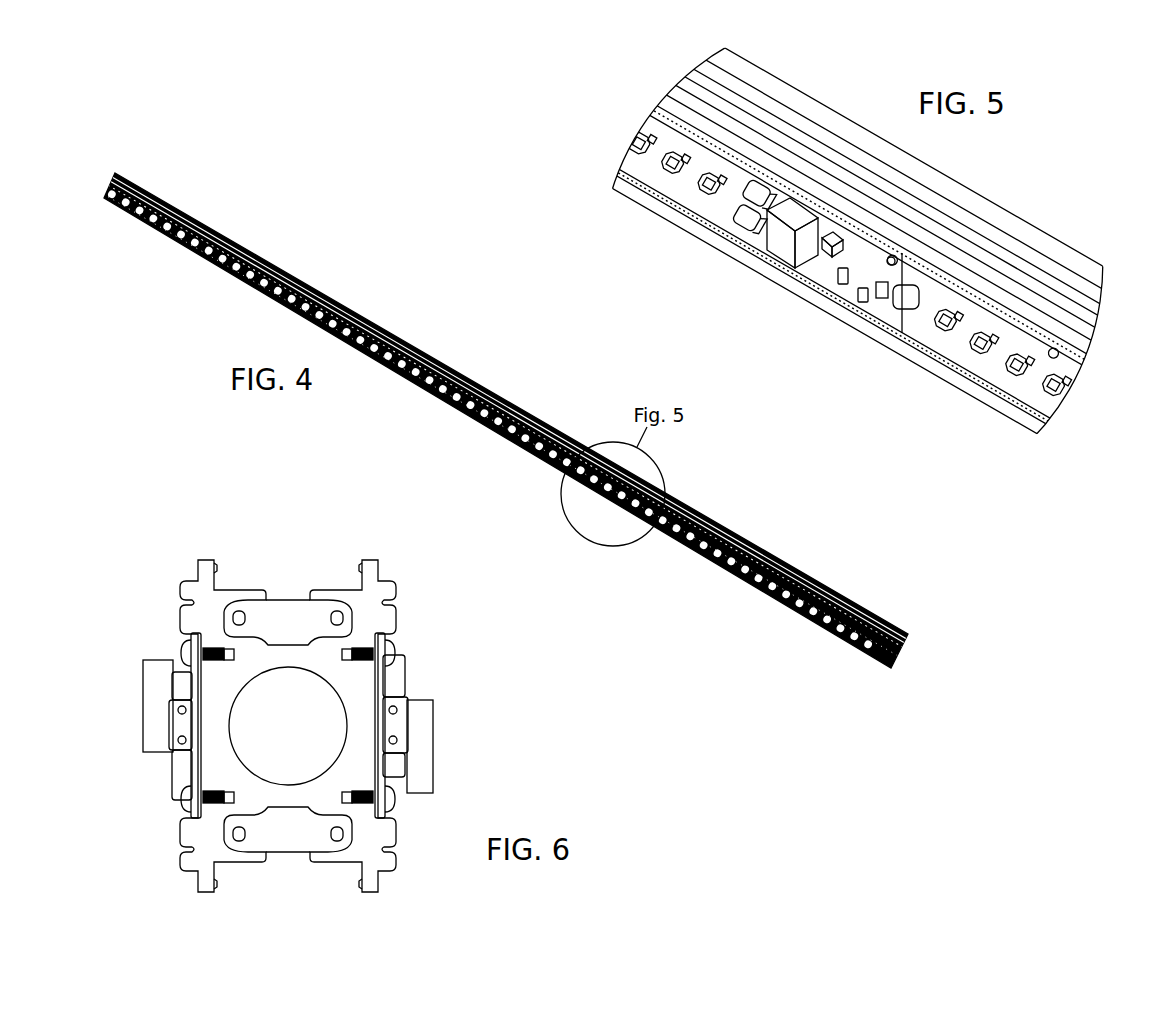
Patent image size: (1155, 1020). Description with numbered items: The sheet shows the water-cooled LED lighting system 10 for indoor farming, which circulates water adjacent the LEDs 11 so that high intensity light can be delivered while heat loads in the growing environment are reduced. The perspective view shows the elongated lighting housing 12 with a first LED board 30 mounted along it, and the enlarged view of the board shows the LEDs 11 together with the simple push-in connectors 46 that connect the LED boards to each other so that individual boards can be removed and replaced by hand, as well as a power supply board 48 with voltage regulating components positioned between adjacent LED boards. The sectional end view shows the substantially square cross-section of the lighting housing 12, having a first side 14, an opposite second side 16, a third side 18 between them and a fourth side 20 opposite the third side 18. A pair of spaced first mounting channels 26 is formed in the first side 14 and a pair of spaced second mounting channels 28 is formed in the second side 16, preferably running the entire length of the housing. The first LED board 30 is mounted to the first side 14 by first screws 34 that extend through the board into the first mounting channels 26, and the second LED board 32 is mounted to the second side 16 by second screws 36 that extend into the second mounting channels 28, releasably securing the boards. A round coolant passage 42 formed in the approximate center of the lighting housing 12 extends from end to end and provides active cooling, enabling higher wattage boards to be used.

In FIG. 4, the water-cooled LED lighting system 10 is at (386, 309).
In FIG. 5, the LEDs 11 is at (977, 323).
In FIG. 4, the lighting housing 12 is at (196, 216).
In FIG. 5, the lighting housing 12 is at (898, 210).
In FIG. 6, the lighting housing 12 is at (272, 633).
In FIG. 6, the first side 14 is at (200, 730).
In FIG. 6, the second side 16 is at (375, 730).
In FIG. 6, the third side 18 is at (293, 808).
In FIG. 6, the fourth side 20 is at (293, 643).
In FIG. 6, the first mounting channels 26 is at (238, 660).
In FIG. 6, the second mounting channels 28 is at (342, 660).
In FIG. 4, the first LED board 30 is at (768, 558).
In FIG. 5, the first LED board 30 is at (955, 350).
In FIG. 6, the first LED board 30 is at (175, 777).
In FIG. 6, the second LED board 32 is at (399, 677).
In FIG. 6, the first screws 34 is at (183, 650).
In FIG. 6, the second screws 36 is at (395, 807).
In FIG. 6, the coolant passage 42 is at (276, 736).
In FIG. 5, the push-in connectors 46 is at (747, 195).
In FIG. 5, the power supply board 48 is at (818, 272).